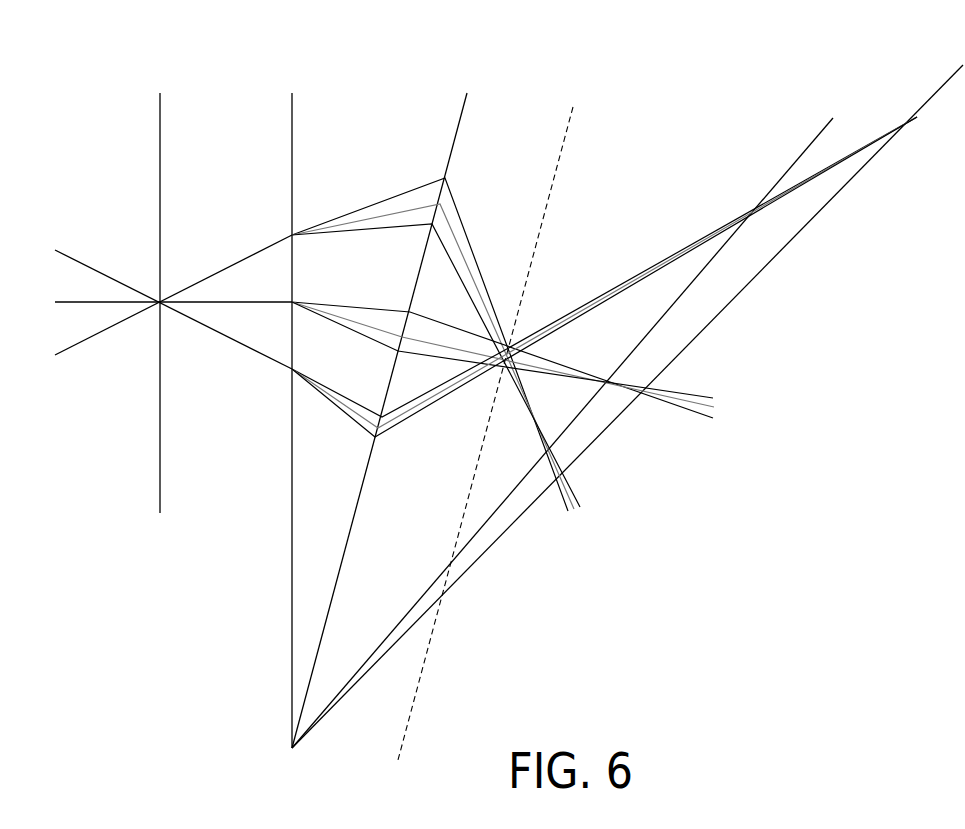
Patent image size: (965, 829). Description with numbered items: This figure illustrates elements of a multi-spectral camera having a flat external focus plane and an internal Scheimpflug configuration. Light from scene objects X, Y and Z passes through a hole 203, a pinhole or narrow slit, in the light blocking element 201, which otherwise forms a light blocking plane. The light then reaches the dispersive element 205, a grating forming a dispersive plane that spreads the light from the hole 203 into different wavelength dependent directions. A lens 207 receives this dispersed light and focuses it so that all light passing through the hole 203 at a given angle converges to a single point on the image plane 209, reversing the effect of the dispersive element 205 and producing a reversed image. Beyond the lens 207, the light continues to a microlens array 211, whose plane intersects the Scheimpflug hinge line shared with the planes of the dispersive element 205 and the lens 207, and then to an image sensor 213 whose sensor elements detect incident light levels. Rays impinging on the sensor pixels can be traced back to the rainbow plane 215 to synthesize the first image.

The light blocking element 201 is at (160, 110).
The hole 203 is at (167, 292).
The dispersive element 205 is at (293, 110).
The lens 207 is at (463, 110).
The image plane 209 is at (817, 127).
The microlens array 211 is at (828, 128).
The image sensor 213 is at (872, 162).
The rainbow plane 215 is at (573, 108).